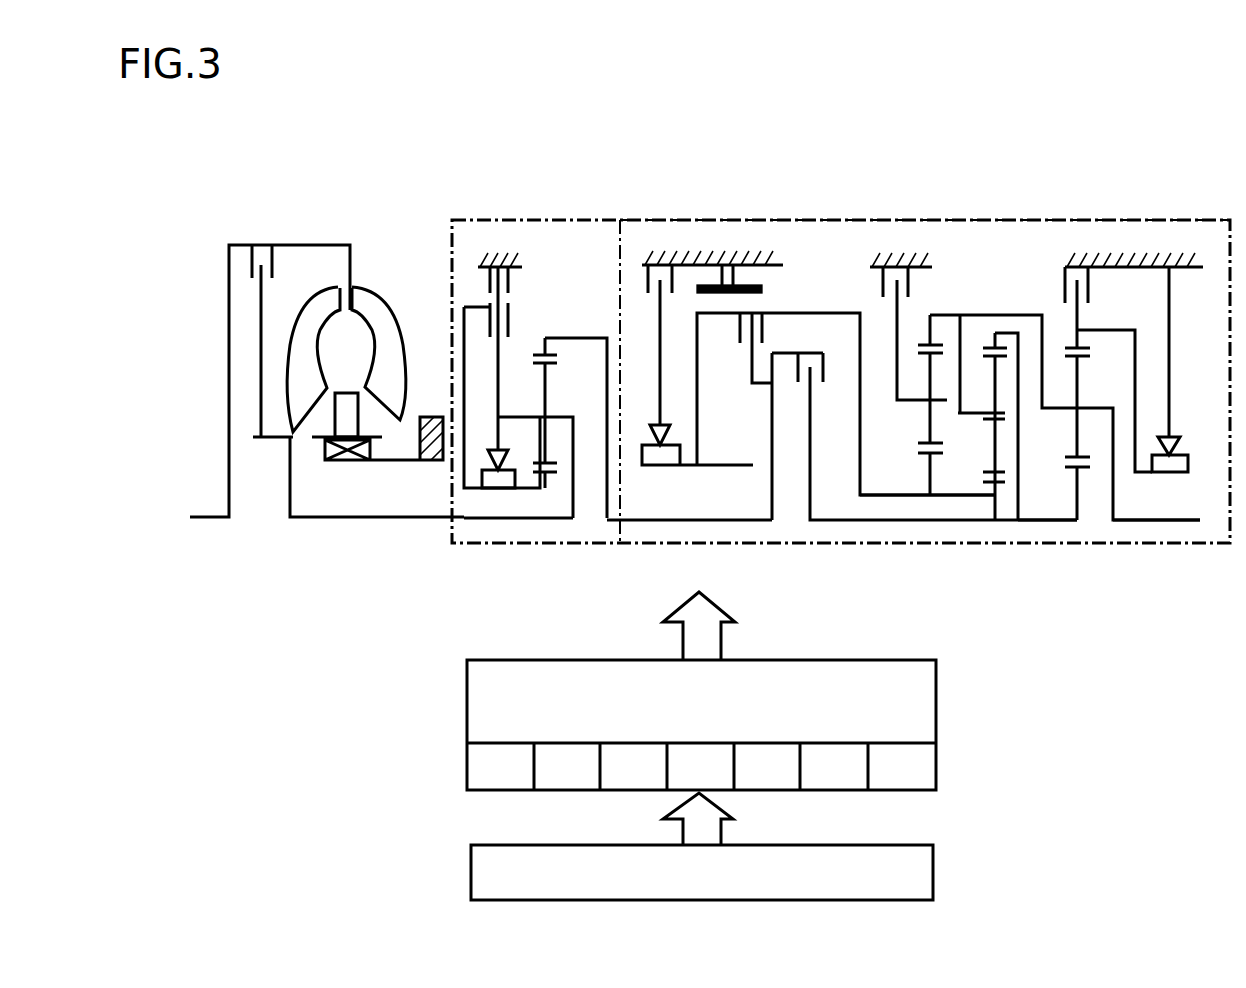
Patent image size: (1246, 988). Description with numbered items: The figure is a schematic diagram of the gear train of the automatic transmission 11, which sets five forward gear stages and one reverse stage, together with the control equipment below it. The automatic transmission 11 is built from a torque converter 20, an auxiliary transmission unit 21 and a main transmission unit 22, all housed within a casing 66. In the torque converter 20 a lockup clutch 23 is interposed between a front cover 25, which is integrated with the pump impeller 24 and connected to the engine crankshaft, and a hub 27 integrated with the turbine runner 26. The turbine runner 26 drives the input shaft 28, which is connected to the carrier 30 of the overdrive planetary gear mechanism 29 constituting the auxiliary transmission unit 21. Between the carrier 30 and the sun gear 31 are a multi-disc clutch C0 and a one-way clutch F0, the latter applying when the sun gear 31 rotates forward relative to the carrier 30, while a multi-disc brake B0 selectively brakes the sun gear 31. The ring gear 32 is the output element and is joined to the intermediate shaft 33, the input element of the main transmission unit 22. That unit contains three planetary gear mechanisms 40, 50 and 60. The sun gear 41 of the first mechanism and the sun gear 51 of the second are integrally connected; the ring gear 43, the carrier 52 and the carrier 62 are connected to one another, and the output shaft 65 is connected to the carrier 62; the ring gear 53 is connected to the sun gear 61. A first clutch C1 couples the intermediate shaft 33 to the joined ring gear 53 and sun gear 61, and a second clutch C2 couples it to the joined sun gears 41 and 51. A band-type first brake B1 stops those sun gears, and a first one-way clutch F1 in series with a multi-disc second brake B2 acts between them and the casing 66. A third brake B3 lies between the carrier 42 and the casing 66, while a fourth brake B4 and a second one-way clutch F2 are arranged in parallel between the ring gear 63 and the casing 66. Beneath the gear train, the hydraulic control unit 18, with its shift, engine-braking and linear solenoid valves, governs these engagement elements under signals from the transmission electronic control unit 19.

The automatic transmission 11 is at (812, 210).
The hydraulic control unit 18 is at (936, 691).
The automatic transmission electronic control unit (T-ECU) 19 is at (933, 881).
The torque converter 20 is at (320, 362).
The auxiliary transmission unit 21 is at (603, 544).
The main transmission unit 22 is at (960, 220).
The lockup clutch 23 is at (250, 260).
The pump impeller 24 is at (398, 428).
The front cover 25 is at (229, 336).
The turbine runner 26 is at (320, 288).
The member (hub) 27 is at (268, 440).
The input shaft 28 is at (331, 519).
The overdrive planetary gear mechanism 29 is at (527, 500).
The carrier 30 is at (547, 405).
The sun gear 31 is at (547, 478).
The ring gear 32 is at (545, 352).
The intermediate shaft 33 is at (721, 522).
The first planetary gear mechanism 40 is at (917, 502).
The sun gear 41 is at (918, 455).
The carrier 42 is at (905, 401).
The ring gear 43 is at (936, 345).
The second planetary gear mechanism 50 is at (994, 502).
The sun gear 51 is at (984, 482).
The carrier 52 is at (982, 414).
The ring gear 53 is at (989, 344).
The third planetary gear mechanism 60 is at (1091, 513).
The sun gear 61 is at (1067, 469).
The carrier 62 is at (1091, 407).
The ring gear 63 is at (1072, 345).
The output shaft 65 is at (1177, 521).
The casing 66 is at (700, 262).
The multi-disc brake B0 is at (490, 277).
The first brake B1 is at (737, 282).
The second brake B2 is at (648, 280).
The third brake B3 is at (883, 281).
The fourth brake B4 is at (1089, 280).
The multi-disc clutch C0 is at (490, 322).
The first clutch C1 is at (823, 366).
The second clutch C2 is at (742, 325).
The one-way clutch F0 is at (492, 489).
The first one-way clutch F1 is at (661, 462).
The second one-way clutch F2 is at (1177, 465).